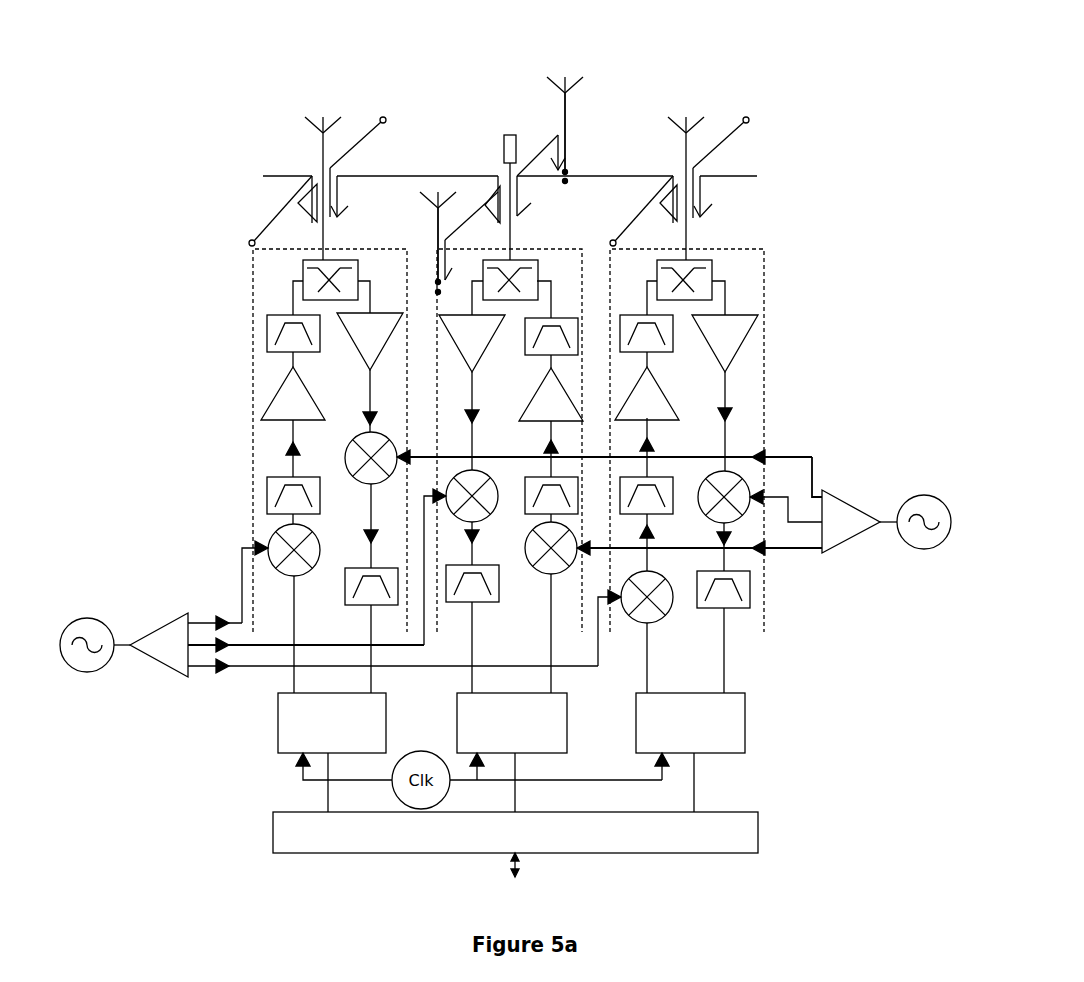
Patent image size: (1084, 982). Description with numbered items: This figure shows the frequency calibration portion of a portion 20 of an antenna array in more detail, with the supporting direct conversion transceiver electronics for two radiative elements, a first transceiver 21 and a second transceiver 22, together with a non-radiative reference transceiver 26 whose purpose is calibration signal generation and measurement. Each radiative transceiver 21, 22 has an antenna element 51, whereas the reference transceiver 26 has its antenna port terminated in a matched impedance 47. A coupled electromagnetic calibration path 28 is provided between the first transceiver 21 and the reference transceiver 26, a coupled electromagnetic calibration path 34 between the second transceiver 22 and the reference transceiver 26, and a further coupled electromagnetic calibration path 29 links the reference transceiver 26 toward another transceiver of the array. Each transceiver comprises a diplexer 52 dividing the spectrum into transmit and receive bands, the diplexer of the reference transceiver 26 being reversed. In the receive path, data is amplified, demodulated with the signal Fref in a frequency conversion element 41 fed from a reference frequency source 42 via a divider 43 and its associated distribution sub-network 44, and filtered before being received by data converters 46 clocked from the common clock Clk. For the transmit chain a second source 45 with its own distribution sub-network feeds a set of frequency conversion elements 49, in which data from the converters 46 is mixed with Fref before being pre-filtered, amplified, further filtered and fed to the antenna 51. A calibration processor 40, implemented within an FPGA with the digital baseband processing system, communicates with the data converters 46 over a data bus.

The portion of an antenna array 20 is at (253, 138).
The first transceiver 21 is at (757, 248).
The second transceiver 22 is at (373, 247).
The reference transceiver 26 is at (553, 247).
The coupled electromagnetic calibration path 28 is at (617, 173).
The coupled electromagnetic calibration path 29 is at (542, 153).
The coupled electromagnetic calibration path 34 is at (388, 173).
The calibration processor 40 is at (750, 810).
The frequency conversion element 41 is at (543, 506).
The reference frequency source 42 is at (920, 532).
The divider 43 is at (832, 518).
The distribution sub-network 44 is at (790, 453).
The second source 45 is at (130, 652).
The data converter 46 is at (523, 723).
The matched impedance 47 is at (508, 137).
The frequency conversion element 49 is at (474, 544).
The antenna element 51 is at (678, 150).
The diplexer 52 is at (508, 280).